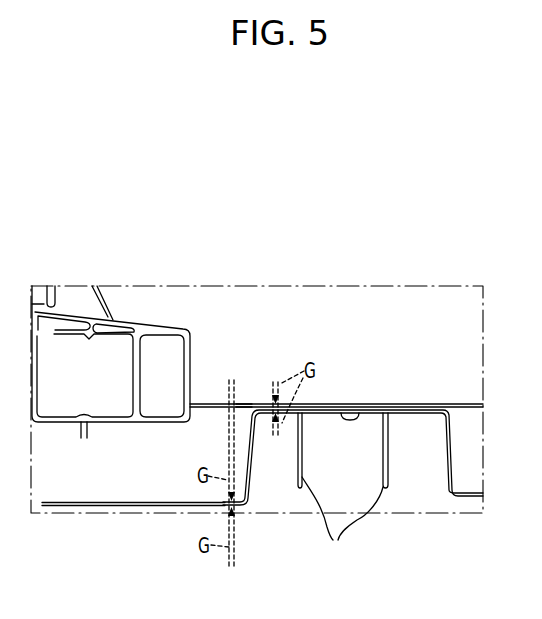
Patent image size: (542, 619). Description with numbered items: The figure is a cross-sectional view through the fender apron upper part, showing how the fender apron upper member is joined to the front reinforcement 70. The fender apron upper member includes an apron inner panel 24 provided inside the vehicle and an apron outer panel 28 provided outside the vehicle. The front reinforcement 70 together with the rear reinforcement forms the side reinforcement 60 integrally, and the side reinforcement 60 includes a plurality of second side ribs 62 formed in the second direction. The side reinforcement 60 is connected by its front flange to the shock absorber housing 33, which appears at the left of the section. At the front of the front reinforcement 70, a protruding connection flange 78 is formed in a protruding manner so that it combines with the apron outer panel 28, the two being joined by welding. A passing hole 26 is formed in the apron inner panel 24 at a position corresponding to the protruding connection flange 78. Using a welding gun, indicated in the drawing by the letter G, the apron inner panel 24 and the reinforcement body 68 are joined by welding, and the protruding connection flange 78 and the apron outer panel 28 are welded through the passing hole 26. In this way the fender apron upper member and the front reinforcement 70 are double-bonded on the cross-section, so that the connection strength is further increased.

The shock absorber housing 33 is at (152, 330).
The apron inner panel 24 is at (207, 403).
The passing hole 26 is at (243, 398).
The apron outer panel 28 is at (86, 506).
The side reinforcement 60 is at (353, 453).
The front reinforcement 70 is at (353, 453).
The protruding connection flange 78 is at (252, 496).
The reinforcement body 68 is at (353, 417).
The second side ribs 62 is at (343, 495).